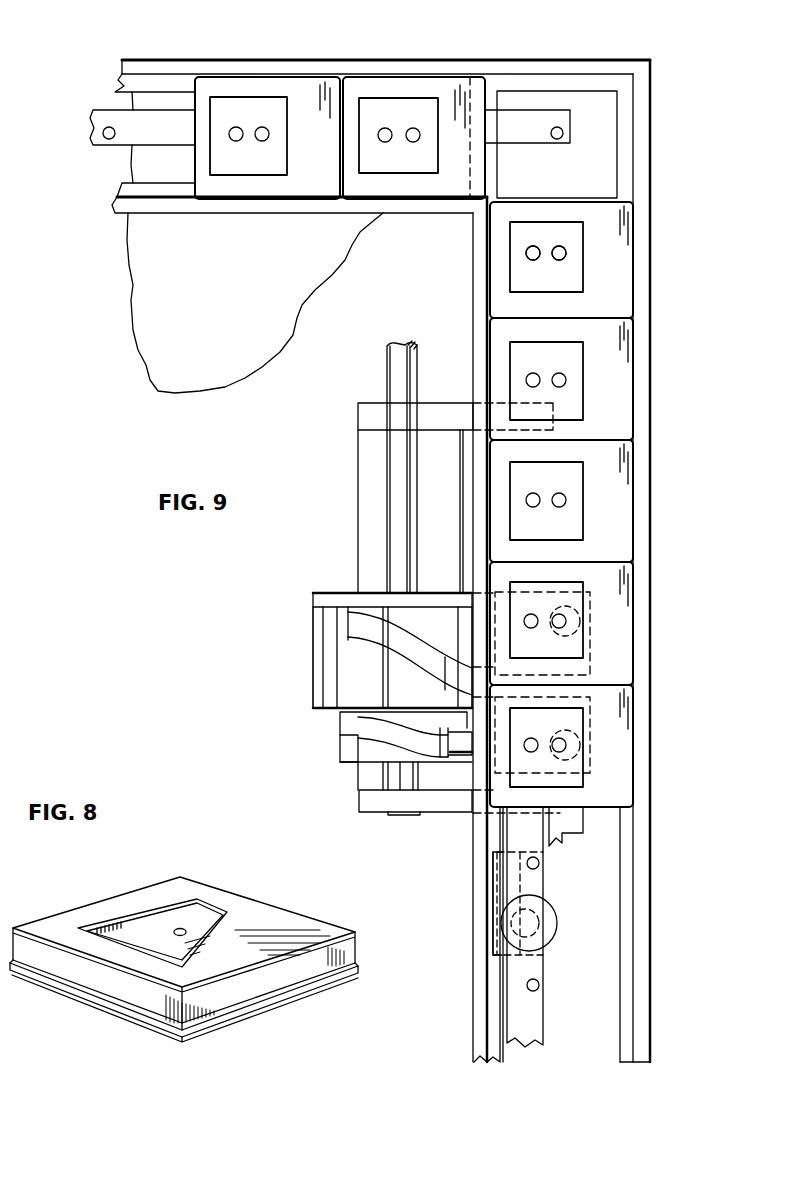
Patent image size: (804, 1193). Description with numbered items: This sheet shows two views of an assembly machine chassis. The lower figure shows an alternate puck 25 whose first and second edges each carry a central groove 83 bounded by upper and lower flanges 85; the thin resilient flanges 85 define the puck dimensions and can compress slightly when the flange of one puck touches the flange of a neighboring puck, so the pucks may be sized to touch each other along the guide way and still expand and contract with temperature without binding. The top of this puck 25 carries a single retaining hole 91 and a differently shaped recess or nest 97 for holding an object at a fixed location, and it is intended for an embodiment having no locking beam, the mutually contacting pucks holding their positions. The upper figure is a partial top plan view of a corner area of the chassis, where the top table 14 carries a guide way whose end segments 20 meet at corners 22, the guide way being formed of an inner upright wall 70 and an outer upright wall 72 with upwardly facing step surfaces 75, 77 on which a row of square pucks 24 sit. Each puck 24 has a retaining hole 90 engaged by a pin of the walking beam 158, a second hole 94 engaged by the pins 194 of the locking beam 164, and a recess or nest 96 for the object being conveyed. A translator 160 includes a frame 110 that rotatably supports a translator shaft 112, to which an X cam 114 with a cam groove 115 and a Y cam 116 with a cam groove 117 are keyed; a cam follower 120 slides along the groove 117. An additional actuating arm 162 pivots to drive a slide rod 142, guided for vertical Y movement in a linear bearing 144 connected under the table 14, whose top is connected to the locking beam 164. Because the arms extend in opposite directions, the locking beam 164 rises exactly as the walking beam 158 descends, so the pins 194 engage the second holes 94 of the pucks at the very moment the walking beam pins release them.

In FIG. 9, the top table 14 is at (245, 270).
In FIG. 9, the end segments 20 is at (352, 65).
In FIG. 9, the corners 22 is at (573, 67).
In FIG. 9, the puck 24 is at (487, 228).
In FIG. 8, the puck 25 is at (267, 913).
In FIG. 9, the inner upright wall 70 is at (474, 1046).
In FIG. 9, the outer upright wall 72 is at (618, 1050).
In FIG. 9, the step surface 75 is at (498, 1065).
In FIG. 9, the step surface 77 is at (620, 1010).
In FIG. 8, the central groove 83 is at (173, 1026).
In FIG. 8, the flanges 85 is at (113, 968).
In FIG. 9, the retaining hole 90 is at (557, 250).
In FIG. 8, the retaining hole 91 is at (180, 929).
In FIG. 9, the second hole 94 is at (531, 259).
In FIG. 9, the recess or nest 96 is at (558, 228).
In FIG. 8, the recess or nest 97 is at (118, 930).
In FIG. 9, the frame 110 is at (365, 420).
In FIG. 9, the translator shaft 112 is at (387, 377).
In FIG. 9, the X cam 114 is at (340, 593).
In FIG. 9, the cam groove 115 is at (330, 622).
In FIG. 9, the Y cam 116 is at (340, 743).
In FIG. 9, the cam groove 117 is at (368, 730).
In FIG. 9, the cam follower 120 is at (458, 813).
In FIG. 9, the slide rod 142 is at (492, 923).
In FIG. 9, the linear bearing 144 is at (557, 923).
In FIG. 9, the walking beam 158 is at (127, 133).
In FIG. 9, the translator 160 is at (337, 475).
In FIG. 9, the actuating arm 162 is at (490, 885).
In FIG. 9, the locking beam 164 is at (538, 880).
In FIG. 9, the pins 194 is at (527, 985).